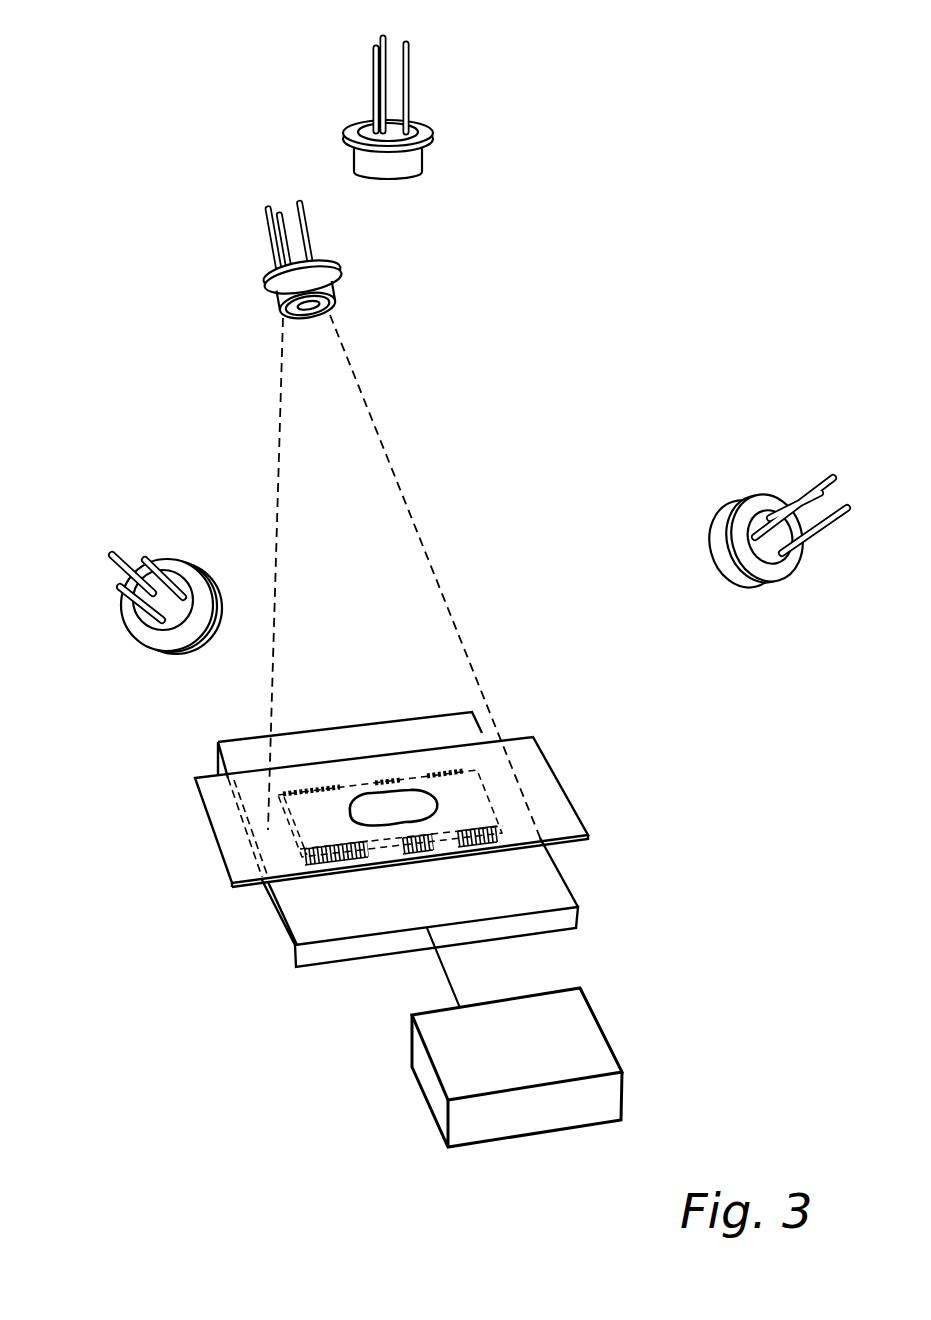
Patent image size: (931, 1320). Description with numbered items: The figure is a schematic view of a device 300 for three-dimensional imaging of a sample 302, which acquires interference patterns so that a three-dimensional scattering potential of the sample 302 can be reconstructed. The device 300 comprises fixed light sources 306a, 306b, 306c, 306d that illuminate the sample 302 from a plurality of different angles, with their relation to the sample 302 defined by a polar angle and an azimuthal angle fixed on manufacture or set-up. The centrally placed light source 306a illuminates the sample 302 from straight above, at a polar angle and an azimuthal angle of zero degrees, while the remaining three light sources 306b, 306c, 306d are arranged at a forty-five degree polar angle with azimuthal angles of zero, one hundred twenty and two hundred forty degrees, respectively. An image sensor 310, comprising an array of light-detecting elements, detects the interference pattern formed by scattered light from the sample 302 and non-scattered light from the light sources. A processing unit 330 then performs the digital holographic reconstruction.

The device 300 is at (158, 96).
The sample 302 is at (407, 802).
The light source 306a is at (415, 163).
The light source 306b is at (277, 295).
The light source 306c is at (128, 635).
The light source 306d is at (750, 503).
The image sensor 310 is at (478, 805).
The processing unit 330 is at (572, 1043).